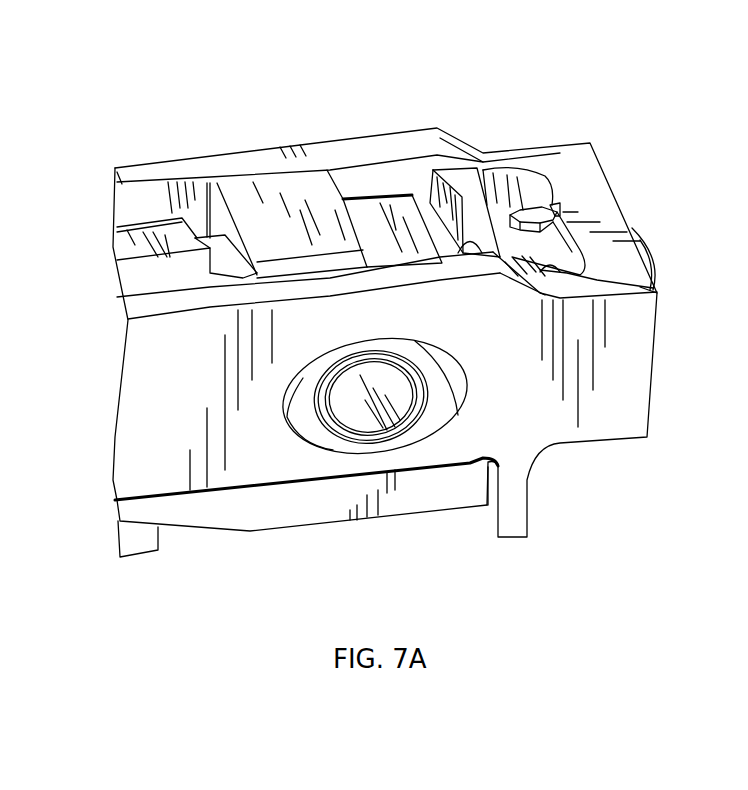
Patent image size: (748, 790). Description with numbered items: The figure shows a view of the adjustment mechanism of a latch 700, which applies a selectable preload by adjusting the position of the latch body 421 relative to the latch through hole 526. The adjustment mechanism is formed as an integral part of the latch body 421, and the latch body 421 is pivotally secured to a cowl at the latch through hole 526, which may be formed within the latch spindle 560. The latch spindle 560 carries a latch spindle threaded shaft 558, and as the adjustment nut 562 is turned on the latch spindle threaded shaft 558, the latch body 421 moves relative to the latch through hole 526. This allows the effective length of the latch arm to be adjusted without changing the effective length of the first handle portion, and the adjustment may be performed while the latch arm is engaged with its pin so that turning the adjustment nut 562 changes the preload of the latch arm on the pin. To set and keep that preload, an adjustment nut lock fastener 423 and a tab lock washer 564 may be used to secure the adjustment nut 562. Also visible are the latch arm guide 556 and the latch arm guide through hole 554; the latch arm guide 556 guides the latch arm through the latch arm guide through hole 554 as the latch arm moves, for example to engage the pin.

The latch 700 is at (632, 80).
The latch body 421 is at (614, 418).
The adjustment nut lock fastener 423 is at (535, 200).
The latch through hole 526 is at (371, 430).
The latch arm guide through hole 554 is at (167, 243).
The latch arm guide 556 is at (311, 192).
The latch spindle threaded shaft 558 is at (648, 254).
The latch spindle 560 is at (397, 207).
The adjustment nut 562 is at (653, 290).
The tab lock washer 564 is at (562, 207).